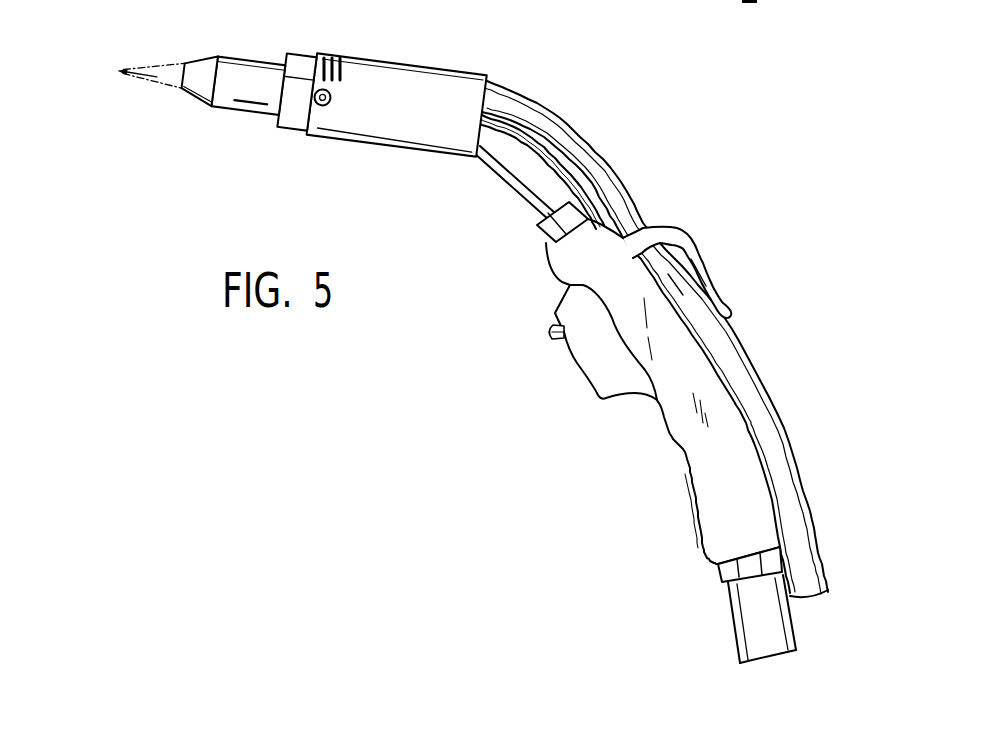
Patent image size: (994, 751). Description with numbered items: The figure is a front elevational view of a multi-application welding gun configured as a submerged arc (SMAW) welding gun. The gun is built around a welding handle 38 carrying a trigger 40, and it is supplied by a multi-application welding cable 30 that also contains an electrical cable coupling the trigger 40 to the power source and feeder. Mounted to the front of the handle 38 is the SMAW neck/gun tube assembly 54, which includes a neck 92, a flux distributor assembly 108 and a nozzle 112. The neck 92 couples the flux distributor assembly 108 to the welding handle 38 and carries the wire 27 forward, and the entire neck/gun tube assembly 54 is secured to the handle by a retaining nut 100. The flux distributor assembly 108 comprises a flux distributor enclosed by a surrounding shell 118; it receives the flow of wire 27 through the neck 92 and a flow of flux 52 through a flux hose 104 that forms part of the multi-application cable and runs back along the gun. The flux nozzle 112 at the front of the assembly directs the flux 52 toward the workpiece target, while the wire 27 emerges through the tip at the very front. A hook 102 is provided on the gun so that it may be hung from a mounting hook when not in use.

The wire 27 is at (141, 66).
The multi-application welding cable 30 is at (764, 618).
The handle 38 is at (723, 509).
The trigger 40 is at (616, 397).
The flux 52 is at (172, 67).
The SMAW neck/gun tube assembly 54 is at (447, 20).
The neck 92 is at (507, 190).
The retaining nut 100 is at (548, 233).
The hook 102 is at (688, 241).
The flux hose 104 is at (558, 124).
The flux distributor assembly 108 is at (362, 22).
The nozzle 112 is at (229, 64).
The shell 118 is at (360, 149).